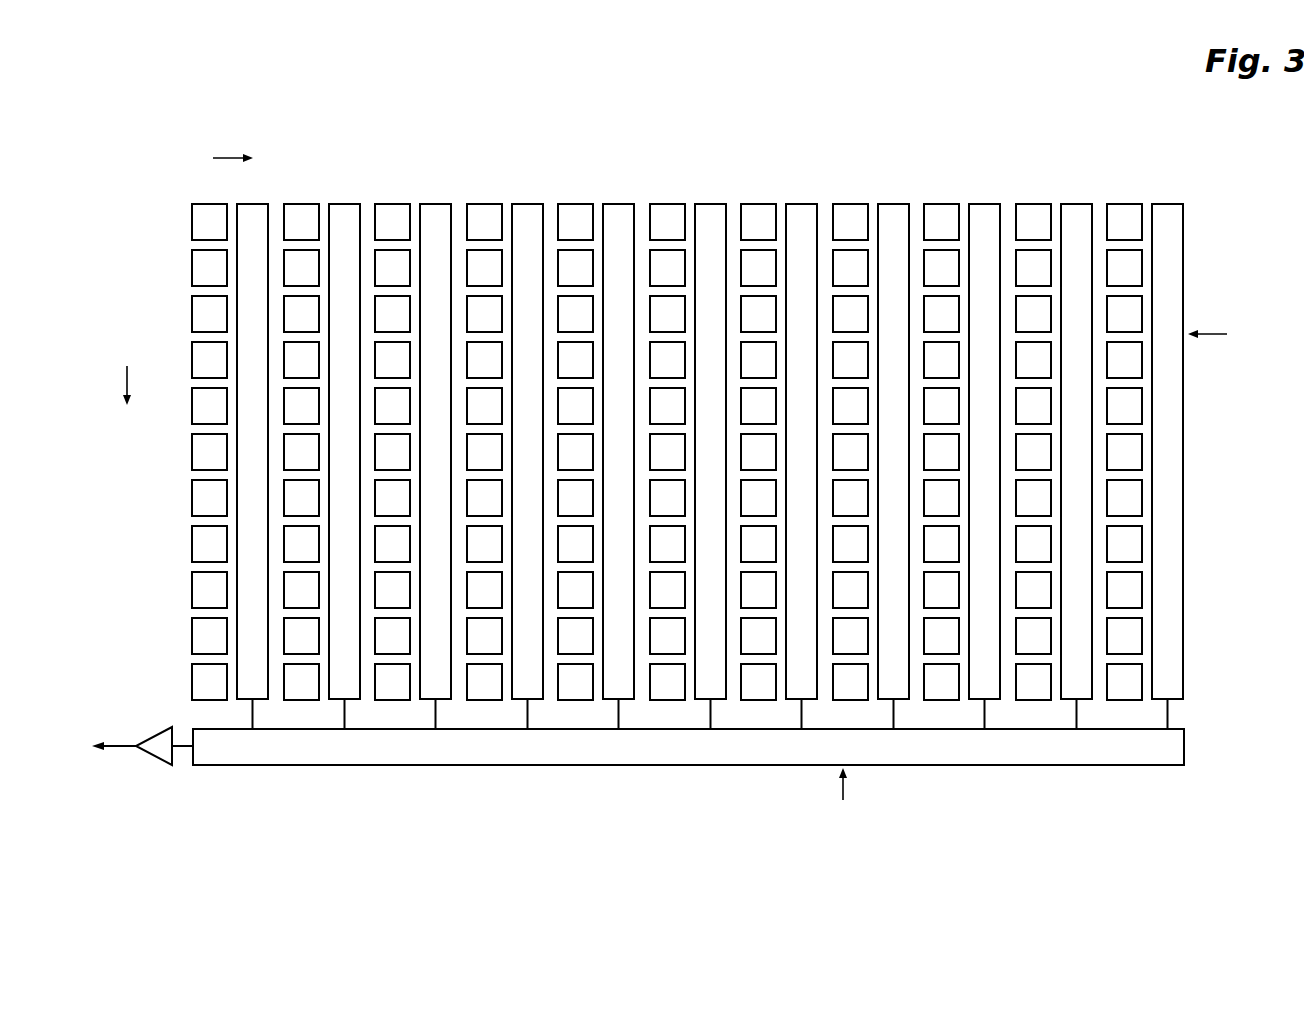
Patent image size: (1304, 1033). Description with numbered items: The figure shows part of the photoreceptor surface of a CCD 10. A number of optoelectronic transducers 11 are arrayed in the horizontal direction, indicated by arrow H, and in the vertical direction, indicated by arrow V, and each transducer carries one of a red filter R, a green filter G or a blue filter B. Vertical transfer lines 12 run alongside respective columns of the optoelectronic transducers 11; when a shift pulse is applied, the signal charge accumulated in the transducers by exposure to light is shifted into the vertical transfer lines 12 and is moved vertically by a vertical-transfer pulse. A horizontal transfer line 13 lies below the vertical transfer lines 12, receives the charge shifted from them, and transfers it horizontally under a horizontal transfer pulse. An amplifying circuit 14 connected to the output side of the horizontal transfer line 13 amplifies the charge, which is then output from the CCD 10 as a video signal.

The CCD 10 is at (149, 233).
The optoelectronic transducers 11 is at (407, 203).
The vertical transfer lines 12 is at (726, 450).
The horizontal transfer line 13 is at (572, 752).
The amplifying circuit 14 is at (148, 753).